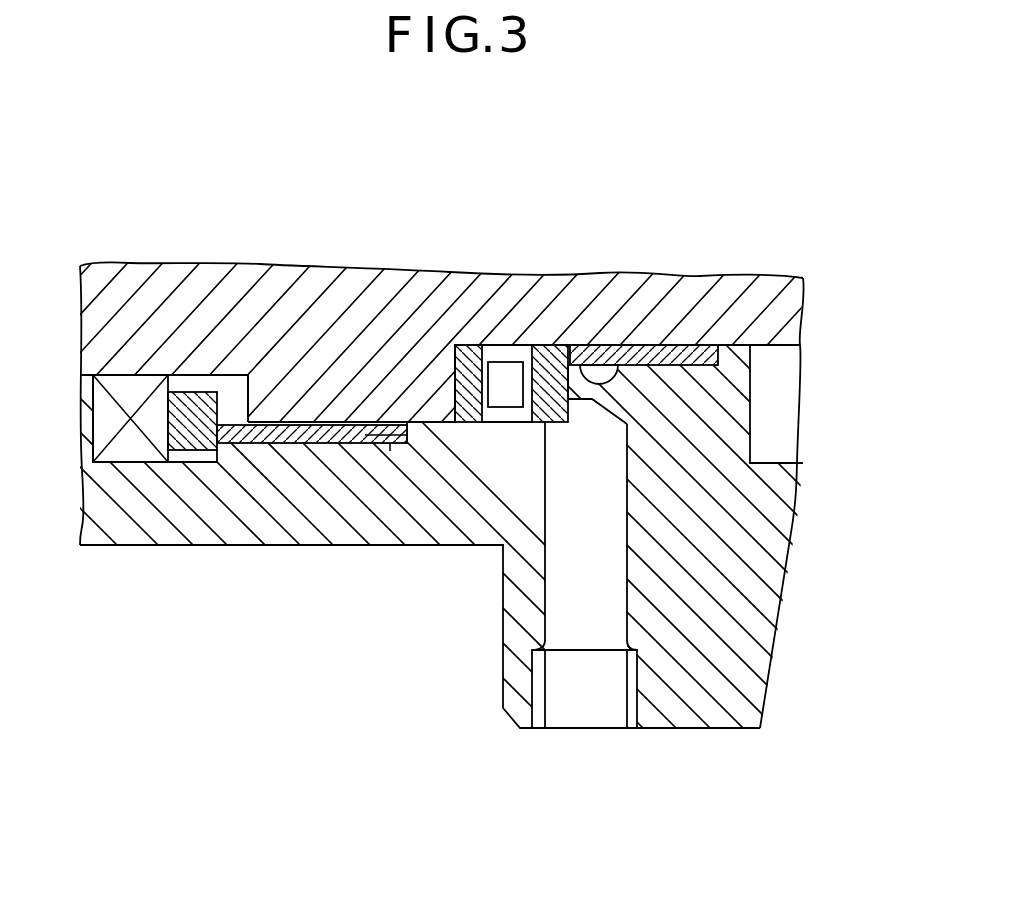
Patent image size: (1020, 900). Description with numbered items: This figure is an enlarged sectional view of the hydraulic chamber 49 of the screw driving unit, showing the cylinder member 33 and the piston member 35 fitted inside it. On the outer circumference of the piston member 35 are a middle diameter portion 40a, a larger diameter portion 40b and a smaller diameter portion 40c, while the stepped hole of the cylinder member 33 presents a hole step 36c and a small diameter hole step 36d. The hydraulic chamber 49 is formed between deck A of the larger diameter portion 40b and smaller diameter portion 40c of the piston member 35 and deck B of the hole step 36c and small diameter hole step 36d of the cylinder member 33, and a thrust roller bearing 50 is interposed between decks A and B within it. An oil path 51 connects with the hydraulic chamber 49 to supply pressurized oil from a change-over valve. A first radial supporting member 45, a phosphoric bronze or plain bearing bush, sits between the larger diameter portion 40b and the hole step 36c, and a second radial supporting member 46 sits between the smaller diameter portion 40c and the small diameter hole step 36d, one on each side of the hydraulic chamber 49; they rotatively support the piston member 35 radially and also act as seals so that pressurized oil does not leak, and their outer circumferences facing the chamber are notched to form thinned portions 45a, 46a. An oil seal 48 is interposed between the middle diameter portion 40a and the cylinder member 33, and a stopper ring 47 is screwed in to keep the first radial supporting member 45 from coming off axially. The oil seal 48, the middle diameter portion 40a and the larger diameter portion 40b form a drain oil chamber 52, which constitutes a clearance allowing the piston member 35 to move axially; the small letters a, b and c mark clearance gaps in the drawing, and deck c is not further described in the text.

The cylinder member 33 is at (329, 525).
The piston member 35 is at (306, 290).
The hole step 36c is at (433, 420).
The small diameter hole step 36d is at (618, 344).
The middle diameter portion 40a is at (118, 378).
The larger diameter portion 40b is at (405, 425).
The smaller diameter portion 40c is at (718, 366).
The first radial supporting member 45 is at (300, 443).
The thinned portion 45a is at (367, 443).
The second radial supporting member 46 is at (637, 347).
The thinned portion 46a is at (597, 352).
The stopper ring 47 is at (190, 437).
The oil seal 48 is at (133, 452).
The hydraulic chamber 49 is at (497, 345).
The thrust roller bearing 50 is at (508, 390).
The oil path 51 is at (544, 622).
The drain oil chamber 52 is at (231, 385).
The gap a is at (437, 424).
The gap b is at (585, 373).
The gap c is at (235, 427).